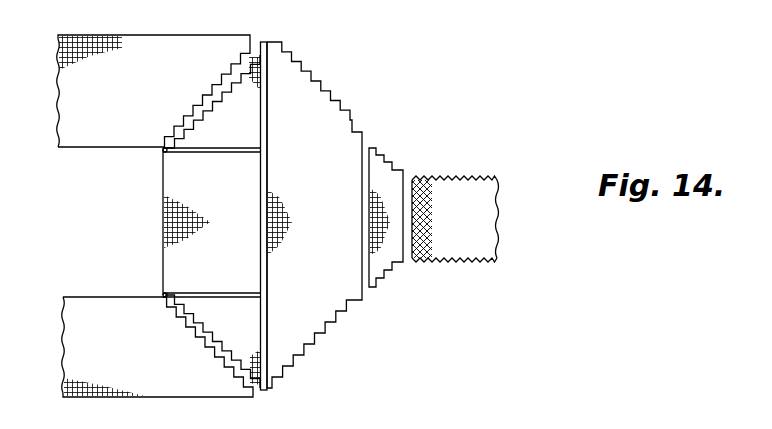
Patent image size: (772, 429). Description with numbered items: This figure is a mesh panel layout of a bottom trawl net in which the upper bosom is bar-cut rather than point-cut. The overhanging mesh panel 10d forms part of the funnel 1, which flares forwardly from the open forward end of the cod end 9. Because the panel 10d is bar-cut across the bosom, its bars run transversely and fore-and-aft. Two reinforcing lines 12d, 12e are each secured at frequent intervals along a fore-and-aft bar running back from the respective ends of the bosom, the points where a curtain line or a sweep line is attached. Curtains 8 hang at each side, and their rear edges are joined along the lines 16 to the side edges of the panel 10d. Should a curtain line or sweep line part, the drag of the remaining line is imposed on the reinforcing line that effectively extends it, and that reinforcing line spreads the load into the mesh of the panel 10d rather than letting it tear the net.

The funnel 1 is at (334, 92).
The curtain 8 is at (127, 112).
The cod end 9 is at (459, 175).
The mesh panel 10d is at (163, 184).
The reinforcing line 12e is at (242, 153).
The reinforcing line 12d is at (240, 292).
The joining line 16 is at (244, 58).